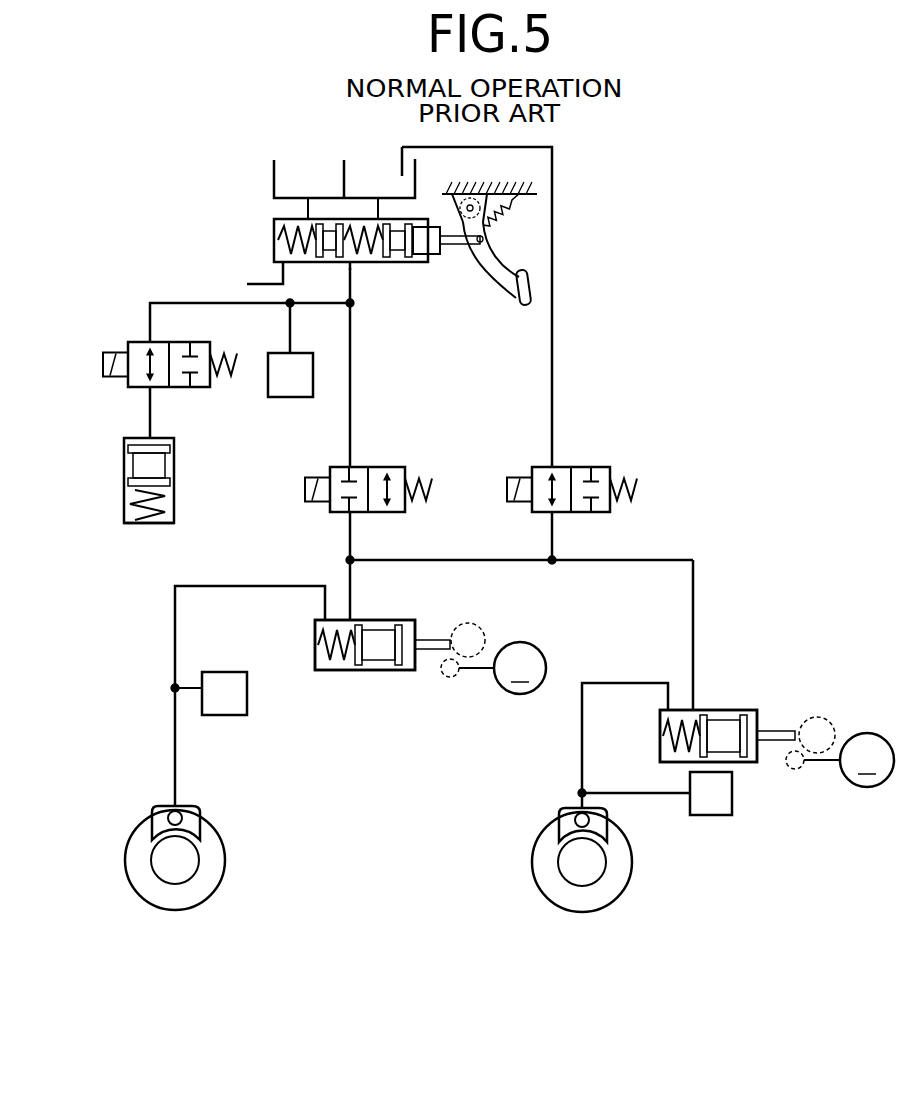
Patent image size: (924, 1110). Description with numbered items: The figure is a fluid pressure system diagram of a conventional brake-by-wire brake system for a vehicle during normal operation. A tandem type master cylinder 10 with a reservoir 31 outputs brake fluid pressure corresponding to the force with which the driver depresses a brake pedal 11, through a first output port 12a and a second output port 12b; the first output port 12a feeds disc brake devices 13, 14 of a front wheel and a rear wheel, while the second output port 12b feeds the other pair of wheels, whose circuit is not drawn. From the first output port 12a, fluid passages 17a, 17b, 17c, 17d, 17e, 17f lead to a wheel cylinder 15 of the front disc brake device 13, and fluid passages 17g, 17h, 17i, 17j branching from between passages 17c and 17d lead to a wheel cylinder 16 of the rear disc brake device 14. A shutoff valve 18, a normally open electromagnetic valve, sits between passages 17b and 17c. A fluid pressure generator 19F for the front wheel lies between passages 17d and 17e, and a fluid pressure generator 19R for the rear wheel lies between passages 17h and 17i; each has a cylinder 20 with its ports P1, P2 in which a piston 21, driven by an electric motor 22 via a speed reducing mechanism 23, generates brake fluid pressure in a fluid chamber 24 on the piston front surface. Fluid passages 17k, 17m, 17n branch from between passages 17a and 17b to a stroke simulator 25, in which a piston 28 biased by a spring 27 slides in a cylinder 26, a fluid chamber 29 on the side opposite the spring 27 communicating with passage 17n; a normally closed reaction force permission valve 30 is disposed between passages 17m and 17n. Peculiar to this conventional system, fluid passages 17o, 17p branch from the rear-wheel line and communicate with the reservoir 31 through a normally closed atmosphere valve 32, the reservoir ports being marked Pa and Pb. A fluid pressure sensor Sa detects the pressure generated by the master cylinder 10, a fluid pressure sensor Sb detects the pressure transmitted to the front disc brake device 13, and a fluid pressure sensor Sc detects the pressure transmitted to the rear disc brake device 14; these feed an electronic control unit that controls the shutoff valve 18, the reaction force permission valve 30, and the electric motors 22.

The master cylinder 10 is at (272, 238).
The brake pedal 11 is at (497, 287).
The first output port 12a is at (352, 263).
The second output port 12b is at (283, 264).
The disc brake device 13 is at (210, 820).
The disc brake device 14 is at (542, 824).
The wheel cylinder 15 is at (157, 808).
The wheel cylinder 16 is at (607, 813).
The fluid passage 17a is at (351, 290).
The fluid passage 17b is at (352, 395).
The fluid passage 17c is at (352, 550).
The fluid passage 17d is at (352, 577).
The fluid passage 17e is at (174, 653).
The fluid passage 17f is at (177, 748).
The fluid passage 17g is at (462, 561).
The fluid passage 17h is at (694, 600).
The fluid passage 17i is at (580, 715).
The fluid passage 17j is at (578, 803).
The fluid passage 17k is at (296, 307).
The fluid passage 17m is at (217, 302).
The fluid passage 17n is at (152, 420).
The fluid passage 17o is at (552, 535).
The fluid passage 17p is at (553, 378).
The shutoff valve 18 is at (362, 466).
The fluid pressure generator 19F is at (387, 676).
The fluid pressure generator 19R is at (753, 774).
The cylinder 20 is at (343, 618).
The piston 21 is at (379, 668).
The electric motor 22 is at (540, 650).
The speed reducing mechanism 23 is at (485, 627).
The fluid chamber 24 is at (326, 668).
The stroke simulator 25 is at (130, 503).
The cylinder 26 is at (170, 494).
The spring 27 is at (150, 520).
The piston 28 is at (150, 470).
The fluid chamber 29 is at (124, 446).
The reaction force permission valve 30 is at (167, 341).
The reservoir 31 is at (415, 177).
The atmosphere valve 32 is at (560, 466).
The reservoir port Pa is at (378, 197).
The reservoir port Pb is at (308, 197).
The pump inlet port P1 is at (355, 620).
The pump outlet port P2 is at (318, 621).
The fluid pressure sensor Sa is at (279, 391).
The fluid pressure sensor Sb is at (236, 708).
The fluid pressure sensor Sc is at (700, 808).